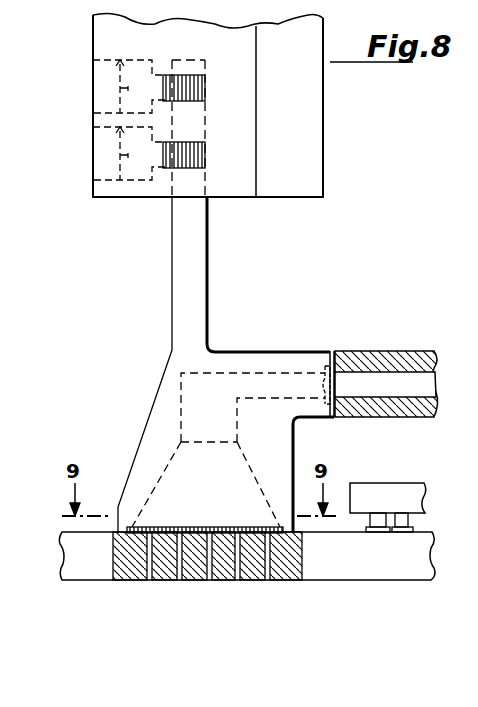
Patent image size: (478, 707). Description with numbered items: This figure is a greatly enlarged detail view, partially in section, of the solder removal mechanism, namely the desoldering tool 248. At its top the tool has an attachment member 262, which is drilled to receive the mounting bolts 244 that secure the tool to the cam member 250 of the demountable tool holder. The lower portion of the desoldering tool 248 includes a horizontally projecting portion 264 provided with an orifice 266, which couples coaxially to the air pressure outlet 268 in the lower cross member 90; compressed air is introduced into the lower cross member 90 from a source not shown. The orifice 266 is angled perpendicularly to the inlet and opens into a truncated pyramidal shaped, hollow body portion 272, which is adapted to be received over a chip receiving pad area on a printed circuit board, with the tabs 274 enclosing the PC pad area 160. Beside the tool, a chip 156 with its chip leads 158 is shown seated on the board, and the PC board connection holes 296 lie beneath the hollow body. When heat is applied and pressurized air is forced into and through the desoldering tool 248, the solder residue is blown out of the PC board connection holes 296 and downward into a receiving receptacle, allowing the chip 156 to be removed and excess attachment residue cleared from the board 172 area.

The bolts 244 is at (114, 73).
The attachment member 262 is at (187, 244).
The cam member 250 is at (237, 200).
The desoldering tool 248 is at (172, 312).
The horizontally projecting portion 264 is at (238, 358).
The orifice 266 is at (322, 364).
The air pressure outlet 268 is at (357, 380).
The lower cross member 90 is at (412, 352).
The truncated pyramidal shaped hollow body portion 272 is at (164, 476).
The tabs 274 is at (122, 535).
The PC pad area 160 is at (168, 581).
The PC board connection holes 296 is at (236, 581).
The base plate 172 is at (337, 585).
The chip 156 is at (378, 492).
The chip leads 158 is at (410, 520).